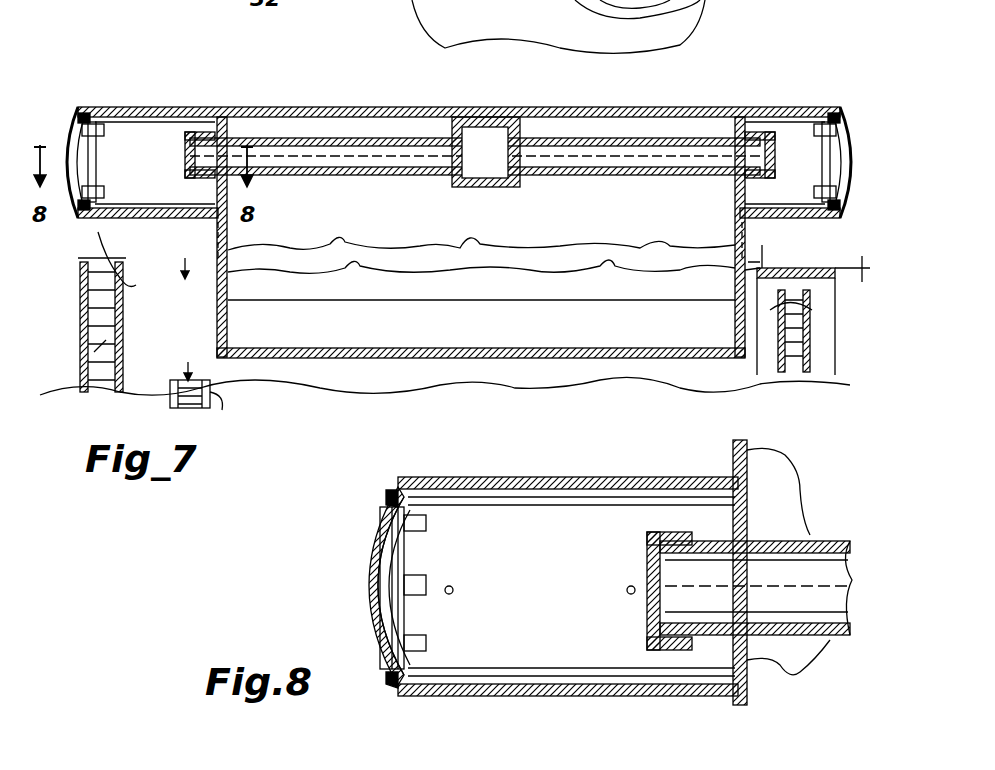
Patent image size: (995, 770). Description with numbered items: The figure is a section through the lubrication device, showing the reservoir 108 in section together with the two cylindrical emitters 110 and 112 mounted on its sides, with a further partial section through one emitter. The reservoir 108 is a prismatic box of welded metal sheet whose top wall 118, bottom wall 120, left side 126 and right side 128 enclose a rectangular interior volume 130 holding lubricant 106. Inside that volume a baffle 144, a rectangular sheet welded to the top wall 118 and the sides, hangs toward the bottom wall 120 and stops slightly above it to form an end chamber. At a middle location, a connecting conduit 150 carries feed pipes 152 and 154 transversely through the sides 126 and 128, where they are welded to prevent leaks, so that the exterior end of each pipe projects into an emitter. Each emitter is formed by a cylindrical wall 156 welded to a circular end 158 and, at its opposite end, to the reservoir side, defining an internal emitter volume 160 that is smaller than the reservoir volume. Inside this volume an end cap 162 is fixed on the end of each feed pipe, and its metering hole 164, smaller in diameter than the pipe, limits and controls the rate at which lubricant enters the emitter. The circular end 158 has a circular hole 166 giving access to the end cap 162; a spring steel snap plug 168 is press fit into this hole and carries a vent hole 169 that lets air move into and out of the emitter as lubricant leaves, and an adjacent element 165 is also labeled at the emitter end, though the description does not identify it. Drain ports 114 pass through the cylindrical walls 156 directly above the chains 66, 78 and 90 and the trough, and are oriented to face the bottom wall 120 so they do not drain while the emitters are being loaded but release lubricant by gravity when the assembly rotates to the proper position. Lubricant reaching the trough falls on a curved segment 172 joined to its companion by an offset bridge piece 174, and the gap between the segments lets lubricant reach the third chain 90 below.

In FIG. 7, the chain 66 is at (222, 410).
In FIG. 7, the chain 78 is at (80, 358).
In FIG. 7, the third chain 90 is at (774, 385).
In FIG. 7, the lubricant 106 is at (180, 322).
In FIG. 7, the reservoir 108 is at (427, 60).
In FIG. 7, the emitter 110 is at (768, 98).
In FIG. 7, the emitter 112 is at (137, 92).
In FIG. 8, the emitter 112 is at (500, 708).
In FIG. 7, the drain ports 114 is at (178, 228).
In FIG. 8, the drain ports 114 is at (452, 594).
In FIG. 7, the top wall 118 is at (532, 108).
In FIG. 7, the bottom wall 120 is at (512, 360).
In FIG. 7, the left side 126 is at (735, 326).
In FIG. 7, the right side 128 is at (228, 330).
In FIG. 8, the right side 128 is at (748, 502).
In FIG. 7, the interior volume 130 is at (481, 244).
In FIG. 7, the baffle 144 is at (538, 302).
In FIG. 7, the connecting conduit 150 is at (486, 188).
In FIG. 7, the feed pipe 152 is at (600, 180).
In FIG. 7, the feed pipe 154 is at (392, 176).
In FIG. 8, the feed pipe 154 is at (808, 540).
In FIG. 7, the cylindrical wall 156 is at (172, 107).
In FIG. 8, the cylindrical wall 156 is at (568, 696).
In FIG. 7, the circular end 158 is at (100, 196).
In FIG. 8, the circular end 158 is at (400, 500).
In FIG. 7, the internal emitter volume 160 is at (133, 136).
In FIG. 7, the end cap 162 is at (200, 180).
In FIG. 8, the end cap 162 is at (646, 550).
In FIG. 7, the metering hole 164 is at (222, 140).
In FIG. 8, the metering hole 164 is at (672, 592).
In FIG. 7, the end cap 165 is at (72, 115).
In FIG. 7, the circular hole 166 is at (75, 212).
In FIG. 8, the circular hole 166 is at (390, 672).
In FIG. 8, the spring steel snap plug 168 is at (360, 548).
In FIG. 7, the vent hole 169 is at (68, 140).
In FIG. 8, the vent hole 169 is at (352, 588).
In FIG. 7, the curved segment 172 is at (738, 276).
In FIG. 7, the offset bridge piece 174 is at (862, 270).